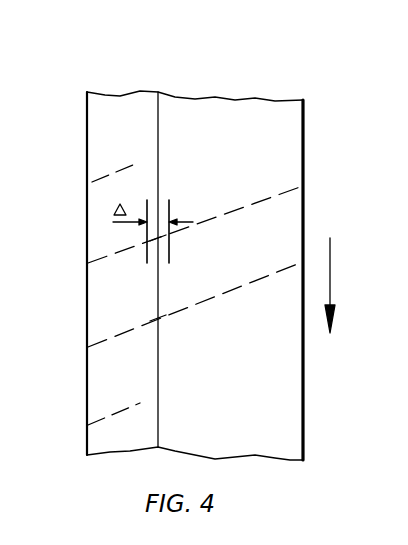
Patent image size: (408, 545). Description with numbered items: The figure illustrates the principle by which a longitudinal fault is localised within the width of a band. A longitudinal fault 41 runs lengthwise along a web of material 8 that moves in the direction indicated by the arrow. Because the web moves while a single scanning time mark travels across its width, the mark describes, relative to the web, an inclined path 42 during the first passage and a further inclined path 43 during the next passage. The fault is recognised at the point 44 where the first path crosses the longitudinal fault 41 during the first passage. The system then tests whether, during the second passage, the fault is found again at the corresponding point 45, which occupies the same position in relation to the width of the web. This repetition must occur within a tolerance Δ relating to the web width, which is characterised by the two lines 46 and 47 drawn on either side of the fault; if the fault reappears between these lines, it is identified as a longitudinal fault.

The web of material 8 is at (304, 123).
The longitudinal fault 41 is at (160, 120).
The path of the time mark during the first passage 42 is at (264, 278).
The path of the time mark during the next passage 43 is at (296, 184).
The point of fault recognition during the first passage 44 is at (159, 318).
The corresponding point during the second passage 45 is at (160, 238).
The tolerance line 46 is at (148, 200).
The tolerance line 47 is at (169, 202).